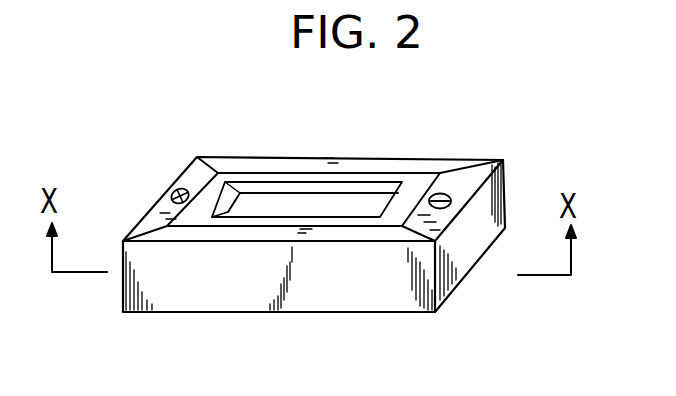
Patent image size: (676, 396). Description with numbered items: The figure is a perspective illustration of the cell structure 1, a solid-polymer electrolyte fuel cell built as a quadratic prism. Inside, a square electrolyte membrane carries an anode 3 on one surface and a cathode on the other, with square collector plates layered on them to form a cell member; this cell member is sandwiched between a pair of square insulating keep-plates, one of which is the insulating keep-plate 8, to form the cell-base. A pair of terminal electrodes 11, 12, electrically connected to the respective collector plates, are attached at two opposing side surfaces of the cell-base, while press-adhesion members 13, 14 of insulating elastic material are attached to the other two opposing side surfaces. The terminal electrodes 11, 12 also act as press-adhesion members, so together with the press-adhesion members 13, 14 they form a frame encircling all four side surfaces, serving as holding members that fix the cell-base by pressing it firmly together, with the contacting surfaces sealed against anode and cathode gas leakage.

The cell structure 1 is at (505, 148).
The anode 3 is at (274, 208).
The insulating keep-plate 8 is at (420, 187).
The terminal electrode 11 is at (503, 188).
The terminal electrode 12 is at (158, 203).
The press-adhesion member 13 is at (352, 162).
The press-adhesion member 14 is at (258, 292).